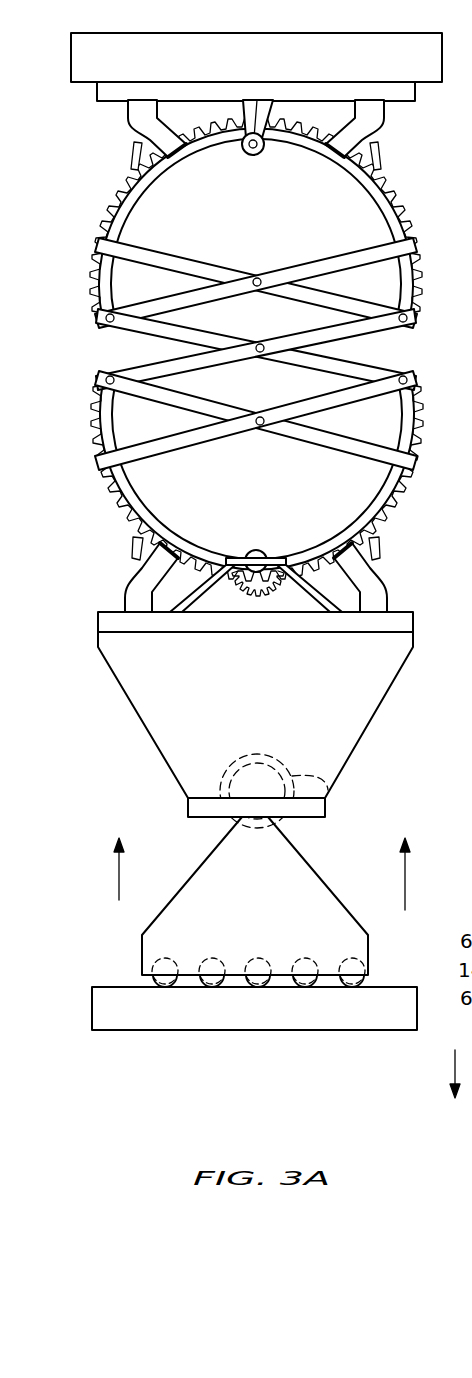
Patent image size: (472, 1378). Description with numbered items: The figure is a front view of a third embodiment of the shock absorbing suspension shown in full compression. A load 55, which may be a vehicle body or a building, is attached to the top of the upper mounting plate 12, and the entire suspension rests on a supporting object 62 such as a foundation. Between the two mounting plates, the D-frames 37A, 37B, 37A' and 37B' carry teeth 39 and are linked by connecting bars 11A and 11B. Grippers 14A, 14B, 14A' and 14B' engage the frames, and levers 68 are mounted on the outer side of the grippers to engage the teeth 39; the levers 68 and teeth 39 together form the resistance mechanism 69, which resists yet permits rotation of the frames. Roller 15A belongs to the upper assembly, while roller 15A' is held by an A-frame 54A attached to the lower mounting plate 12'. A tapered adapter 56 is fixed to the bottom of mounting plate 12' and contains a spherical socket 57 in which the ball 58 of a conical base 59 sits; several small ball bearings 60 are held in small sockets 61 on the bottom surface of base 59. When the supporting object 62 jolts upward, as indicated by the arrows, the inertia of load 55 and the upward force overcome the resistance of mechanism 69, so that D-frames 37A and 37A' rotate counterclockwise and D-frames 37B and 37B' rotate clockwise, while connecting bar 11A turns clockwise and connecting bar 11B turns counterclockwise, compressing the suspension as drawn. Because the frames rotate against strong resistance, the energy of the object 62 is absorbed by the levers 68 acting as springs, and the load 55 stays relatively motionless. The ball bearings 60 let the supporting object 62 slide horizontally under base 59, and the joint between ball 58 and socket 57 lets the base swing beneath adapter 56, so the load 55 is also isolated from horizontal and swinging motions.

The load 55 is at (248, 50).
The mounting plate 12 is at (224, 96).
The mounting plate 12' is at (284, 625).
The gripper 14A is at (377, 78).
The gripper 14B is at (109, 128).
The gripper 14A' is at (105, 580).
The gripper 14B' is at (403, 577).
The roller 15A is at (273, 148).
The roller 15A' is at (256, 561).
The lever 68 is at (133, 144).
The resistance mechanism 69 is at (118, 165).
The teeth 39 is at (113, 503).
The D-frame 37A is at (435, 295).
The D-frame 37B is at (73, 309).
The D-frame 37A' is at (73, 393).
The D-frame 37B' is at (435, 410).
The connecting bar 11A is at (290, 338).
The connecting bar 11B is at (305, 362).
The A-frame 54A is at (277, 562).
The tapered adapter 56 is at (357, 710).
The spherical socket 57 is at (328, 780).
The ball 58 is at (325, 807).
The conical base 59 is at (293, 867).
The ball bearings 60 is at (370, 968).
The sockets 61 is at (368, 943).
The supporting object 62 is at (103, 1002).